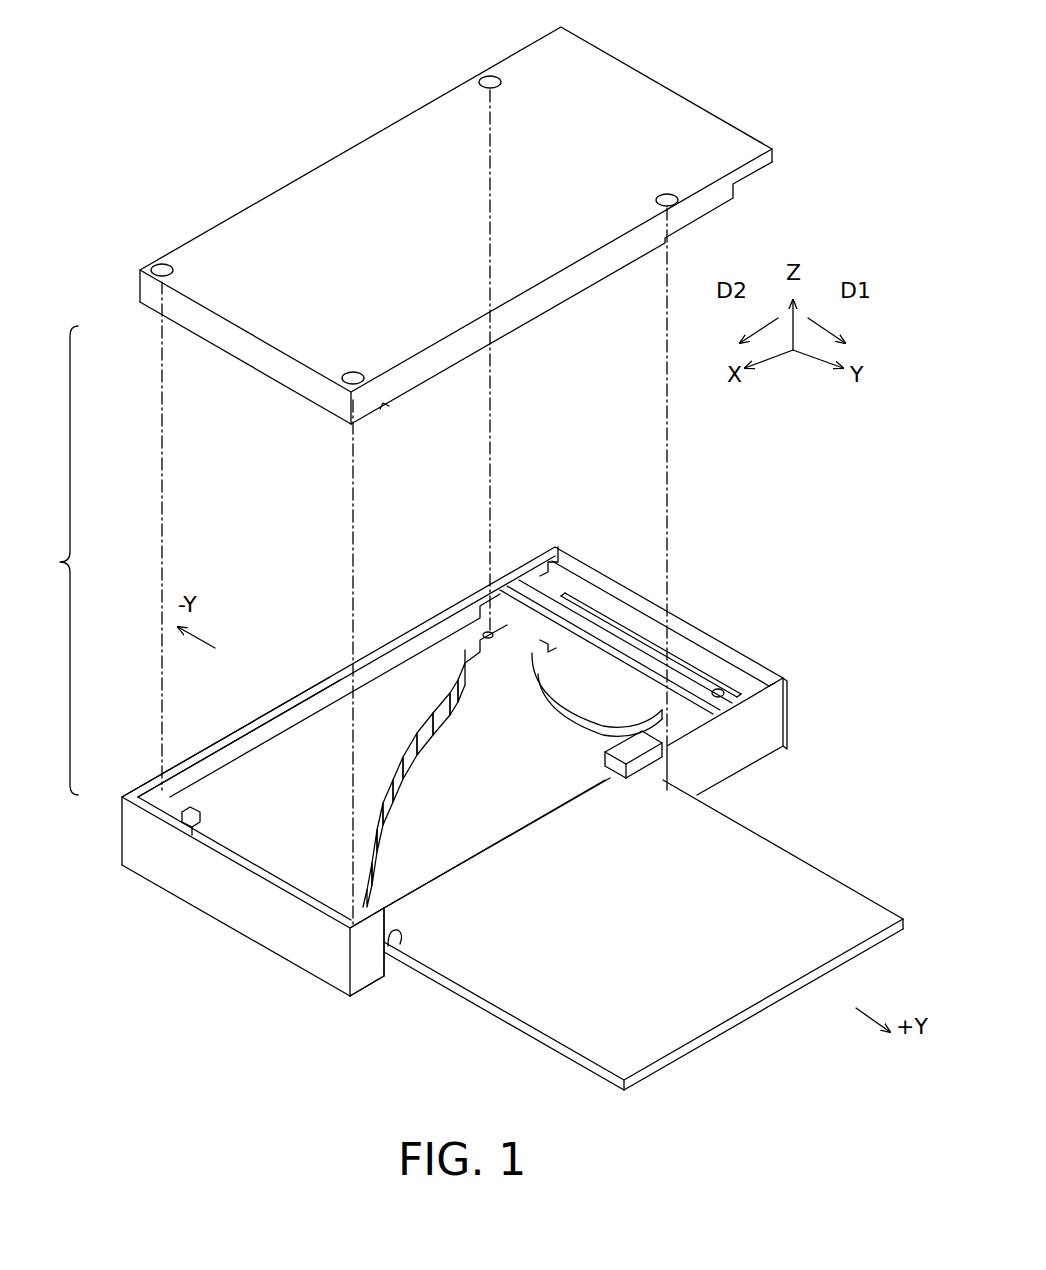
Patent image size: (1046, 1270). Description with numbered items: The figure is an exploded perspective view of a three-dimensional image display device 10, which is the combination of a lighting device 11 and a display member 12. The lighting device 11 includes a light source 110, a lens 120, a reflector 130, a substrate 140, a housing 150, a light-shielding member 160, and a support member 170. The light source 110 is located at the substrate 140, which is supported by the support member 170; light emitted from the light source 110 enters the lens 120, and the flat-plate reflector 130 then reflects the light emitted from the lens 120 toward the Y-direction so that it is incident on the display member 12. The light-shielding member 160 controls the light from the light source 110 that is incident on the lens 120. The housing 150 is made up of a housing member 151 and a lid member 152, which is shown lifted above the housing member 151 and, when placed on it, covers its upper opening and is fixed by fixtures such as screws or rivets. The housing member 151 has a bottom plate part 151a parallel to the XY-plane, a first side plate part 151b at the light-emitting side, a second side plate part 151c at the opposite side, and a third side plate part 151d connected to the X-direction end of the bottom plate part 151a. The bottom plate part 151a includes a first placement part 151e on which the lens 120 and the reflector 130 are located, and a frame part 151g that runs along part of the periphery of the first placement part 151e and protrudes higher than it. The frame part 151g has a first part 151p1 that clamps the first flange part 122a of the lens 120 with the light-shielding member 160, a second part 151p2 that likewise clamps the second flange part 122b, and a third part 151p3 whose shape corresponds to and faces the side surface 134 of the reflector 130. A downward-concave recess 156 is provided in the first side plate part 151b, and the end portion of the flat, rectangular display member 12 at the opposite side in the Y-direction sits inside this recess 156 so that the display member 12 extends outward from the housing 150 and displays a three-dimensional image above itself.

The three-dimensional image display device 10 is at (205, 102).
The lighting device 11 is at (816, 660).
The display member 12 is at (848, 930).
The light source 110 is at (653, 660).
The lens 120 is at (608, 700).
The first flange part 122a is at (650, 700).
The second flange part 122b is at (548, 645).
The reflector 130 is at (280, 765).
The side surface 134 is at (190, 828).
The substrate 140 is at (690, 670).
The housing 150 is at (43, 560).
The housing member 151 is at (135, 845).
The bottom plate part 151a is at (433, 845).
The first side plate part 151b is at (365, 942).
The second side plate part 151c is at (215, 745).
The third side plate part 151d is at (217, 892).
The first placement part 151e is at (480, 820).
The frame part 151g is at (413, 673).
The first part 151p1 is at (672, 725).
The second part 151p2 is at (523, 645).
The third part 151p3 is at (320, 723).
The lid member 152 is at (143, 292).
The recess 156 is at (398, 953).
The light-shielding member 160 is at (700, 695).
The support member 170 is at (740, 682).